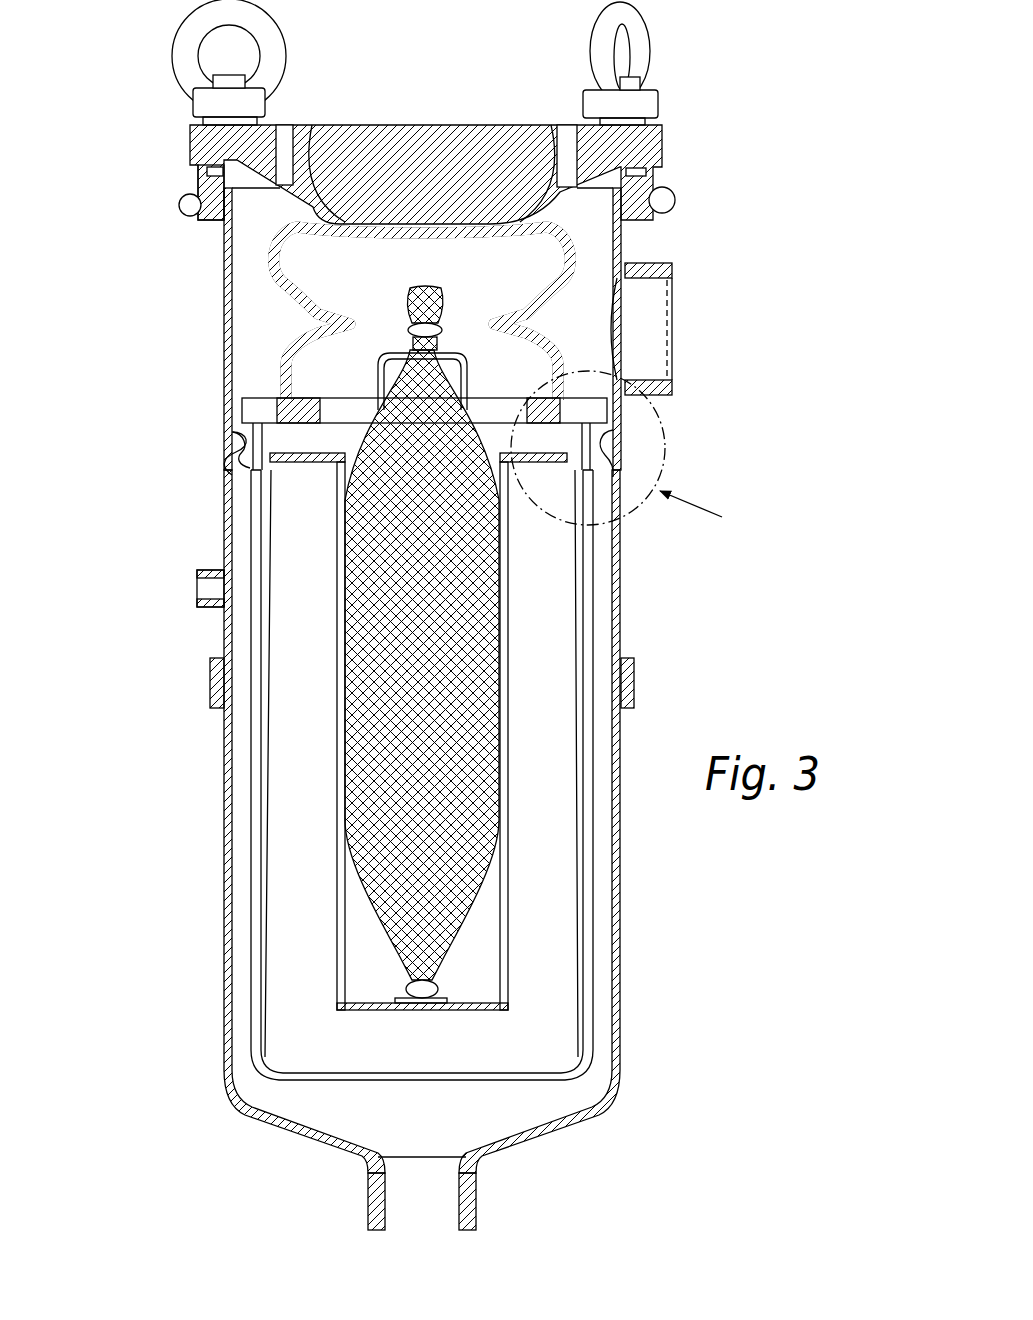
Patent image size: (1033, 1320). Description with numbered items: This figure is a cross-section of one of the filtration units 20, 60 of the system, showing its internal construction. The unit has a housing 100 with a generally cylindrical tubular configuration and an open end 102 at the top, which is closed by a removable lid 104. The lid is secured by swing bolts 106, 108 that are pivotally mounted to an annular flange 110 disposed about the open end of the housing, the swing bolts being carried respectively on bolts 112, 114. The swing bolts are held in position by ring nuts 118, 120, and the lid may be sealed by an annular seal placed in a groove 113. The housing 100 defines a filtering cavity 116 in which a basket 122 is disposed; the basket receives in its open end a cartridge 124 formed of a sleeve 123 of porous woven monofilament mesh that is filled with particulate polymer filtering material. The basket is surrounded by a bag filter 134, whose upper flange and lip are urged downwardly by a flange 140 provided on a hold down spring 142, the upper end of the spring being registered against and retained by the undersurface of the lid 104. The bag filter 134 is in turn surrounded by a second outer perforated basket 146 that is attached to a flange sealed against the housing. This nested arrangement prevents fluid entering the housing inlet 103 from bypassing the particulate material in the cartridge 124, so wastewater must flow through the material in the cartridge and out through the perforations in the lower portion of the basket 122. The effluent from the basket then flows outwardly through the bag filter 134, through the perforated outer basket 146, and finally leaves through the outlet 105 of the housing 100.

The filtration unit 20 is at (429, 615).
The filtration unit 60 is at (429, 615).
The housing 100 is at (623, 903).
The open end 102 is at (262, 222).
The housing inlet 103 is at (646, 380).
The removable lid 104 is at (404, 122).
The outlet 105 is at (452, 1213).
The swing bolt 106 is at (233, 75).
The swing bolt 108 is at (636, 78).
The annular flange 110 is at (198, 190).
The bolt 112 is at (193, 207).
The groove 113 is at (213, 167).
The bolt 114 is at (665, 200).
The filtering cavity 116 is at (358, 1109).
The ring nut 118 is at (192, 30).
The ring nut 120 is at (633, 30).
The basket 122 is at (333, 550).
The sleeve 123 is at (370, 410).
The cartridge 124 is at (377, 380).
The bag filter 134 is at (268, 742).
The flange 140 is at (310, 443).
The hold down spring 142 is at (304, 125).
The second outer perforated basket 146 is at (595, 640).